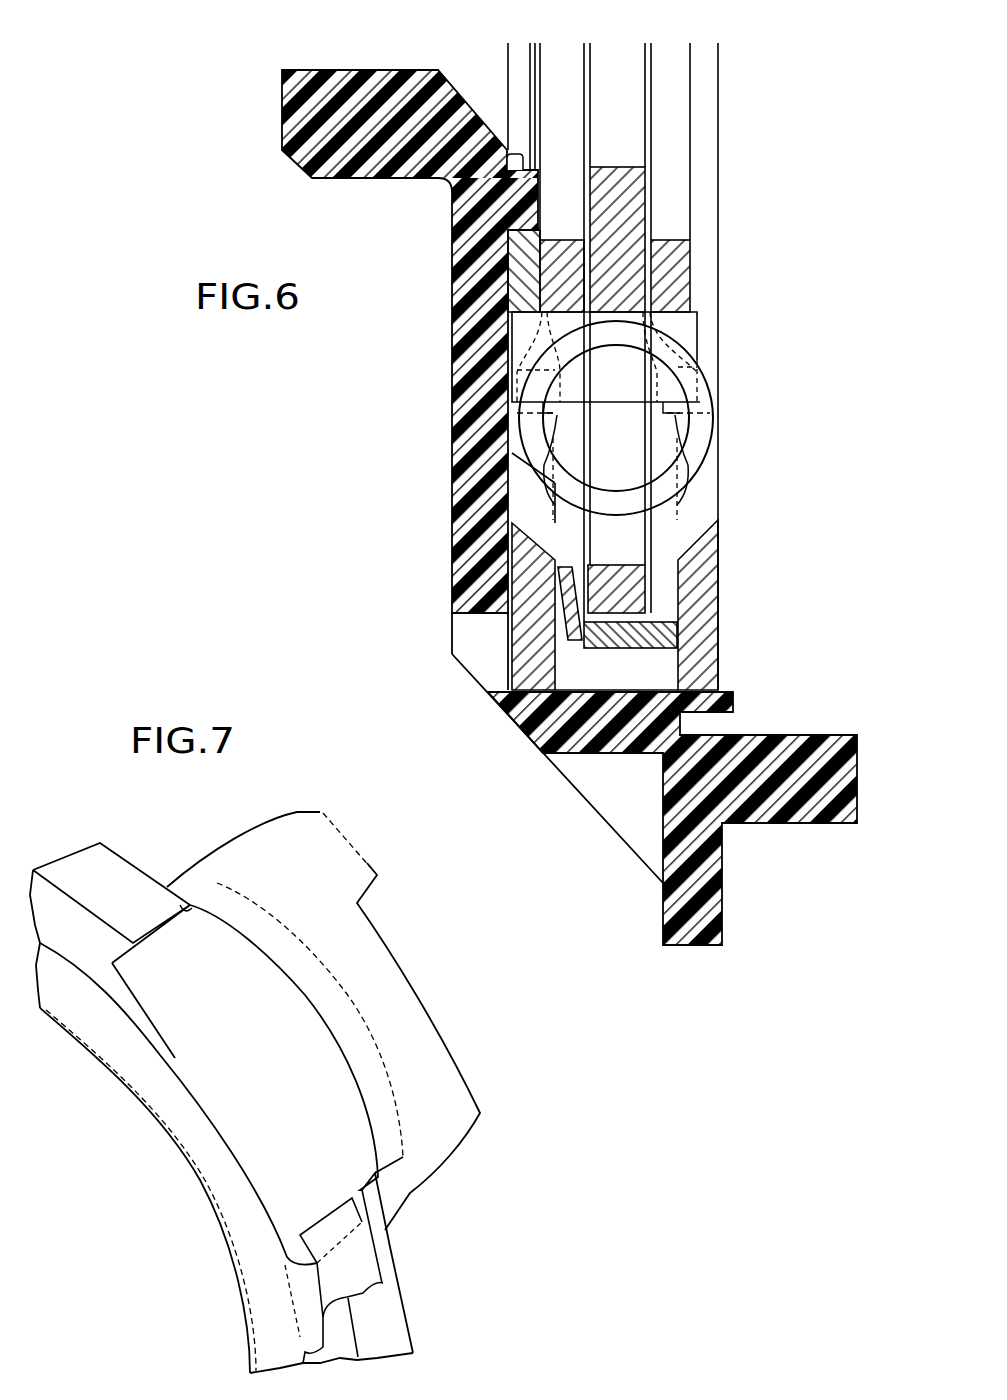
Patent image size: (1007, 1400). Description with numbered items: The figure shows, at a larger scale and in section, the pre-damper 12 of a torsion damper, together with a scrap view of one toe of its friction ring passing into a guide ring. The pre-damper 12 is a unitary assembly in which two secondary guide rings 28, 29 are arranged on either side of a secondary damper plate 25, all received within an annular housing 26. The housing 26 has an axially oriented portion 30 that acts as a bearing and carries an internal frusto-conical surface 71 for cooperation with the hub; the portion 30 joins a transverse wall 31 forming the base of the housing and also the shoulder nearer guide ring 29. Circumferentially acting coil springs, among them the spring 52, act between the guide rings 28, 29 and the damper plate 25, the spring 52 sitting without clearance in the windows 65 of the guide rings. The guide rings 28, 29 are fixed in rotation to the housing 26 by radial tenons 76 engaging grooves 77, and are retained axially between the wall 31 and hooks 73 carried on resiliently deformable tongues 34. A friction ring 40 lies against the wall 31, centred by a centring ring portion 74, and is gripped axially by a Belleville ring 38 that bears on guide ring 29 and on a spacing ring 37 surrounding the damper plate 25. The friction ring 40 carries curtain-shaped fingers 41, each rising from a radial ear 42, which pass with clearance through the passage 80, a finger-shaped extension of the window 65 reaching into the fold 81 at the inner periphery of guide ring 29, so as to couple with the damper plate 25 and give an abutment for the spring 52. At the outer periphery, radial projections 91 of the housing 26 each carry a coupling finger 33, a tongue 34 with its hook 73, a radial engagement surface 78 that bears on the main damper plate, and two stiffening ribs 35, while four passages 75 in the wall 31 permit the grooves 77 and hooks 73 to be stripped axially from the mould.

In FIG. 6, the pre-damper 12 is at (744, 914).
In FIG. 6, the secondary damper plate 25 is at (647, 190).
In FIG. 6, the housing 26 is at (254, 103).
In FIG. 6, the secondary guide ring 28 is at (725, 590).
In FIG. 7, the secondary guide ring 29 is at (480, 1113).
In FIG. 6, the axially oriented portion 30 is at (313, 180).
In FIG. 6, the transverse wall 31 is at (452, 440).
In FIG. 6, the coupling finger 33 is at (795, 824).
In FIG. 6, the tongue 34 is at (732, 697).
In FIG. 6, the stiffening rib 35 is at (625, 843).
In FIG. 6, the spacing ring 37 is at (623, 660).
In FIG. 6, the axially acting resilient means 38 is at (560, 597).
In FIG. 6, the friction ring 40 is at (517, 275).
In FIG. 6, the projection 41 is at (690, 320).
In FIG. 7, the projection 41 is at (350, 1215).
In FIG. 7, the radial ear 42 is at (365, 1260).
In FIG. 6, the spring 52 is at (682, 372).
In FIG. 7, the window 65 is at (187, 905).
In FIG. 6, the internal frusto-conical surface 71 is at (455, 90).
In FIG. 6, the hook 73 is at (727, 692).
In FIG. 6, the centring ring portion 74 is at (453, 195).
In FIG. 6, the passage 75 is at (462, 630).
In FIG. 6, the radial tenon 76 is at (733, 686).
In FIG. 7, the radial tenon 76 is at (365, 877).
In FIG. 6, the groove 77 is at (575, 682).
In FIG. 6, the radial engagement surface 78 is at (705, 948).
In FIG. 7, the passage 80 is at (382, 1272).
In FIG. 6, the fold 81 is at (710, 415).
In FIG. 7, the fold 81 is at (100, 843).
In FIG. 6, the radial projection 91 is at (672, 948).